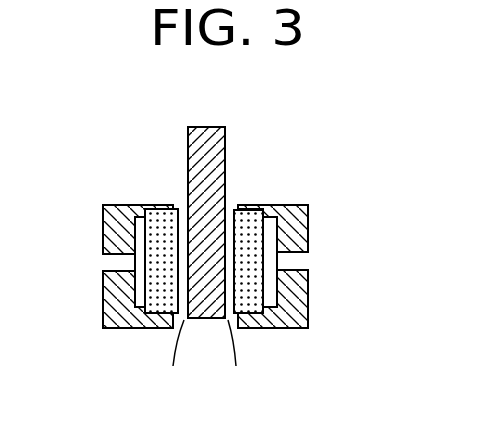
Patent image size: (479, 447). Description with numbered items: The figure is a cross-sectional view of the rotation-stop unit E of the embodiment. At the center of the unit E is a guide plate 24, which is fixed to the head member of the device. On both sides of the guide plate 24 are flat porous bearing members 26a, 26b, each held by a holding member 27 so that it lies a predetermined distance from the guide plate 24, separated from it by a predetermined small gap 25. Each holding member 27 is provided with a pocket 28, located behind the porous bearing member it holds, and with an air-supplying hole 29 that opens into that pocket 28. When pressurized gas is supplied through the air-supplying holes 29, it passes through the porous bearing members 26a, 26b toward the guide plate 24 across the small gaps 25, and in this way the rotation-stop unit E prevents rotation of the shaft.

The guide plate 24 is at (225, 148).
The small gaps 25 is at (200, 362).
The flat porous bearing member 26a is at (157, 207).
The flat porous bearing member 26b is at (245, 207).
The holding member 27 is at (110, 315).
The pocket 28 is at (135, 235).
The air-supplying hole 29 is at (110, 263).
The rotation-stop unit E is at (350, 206).